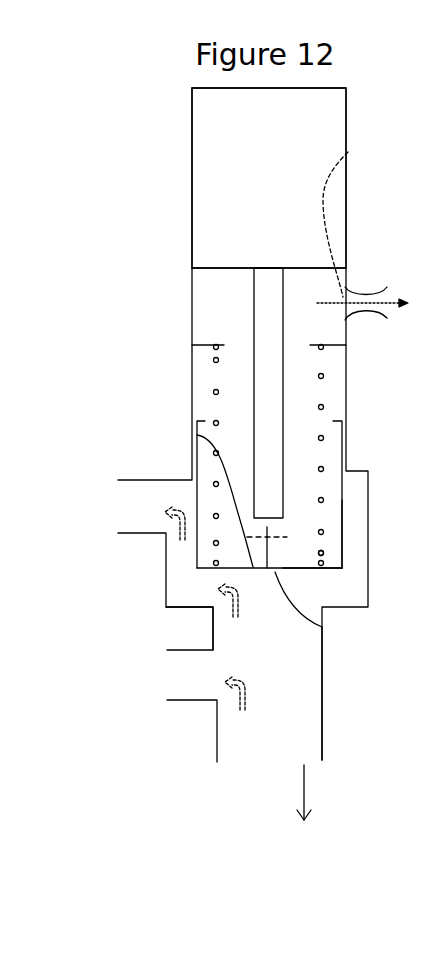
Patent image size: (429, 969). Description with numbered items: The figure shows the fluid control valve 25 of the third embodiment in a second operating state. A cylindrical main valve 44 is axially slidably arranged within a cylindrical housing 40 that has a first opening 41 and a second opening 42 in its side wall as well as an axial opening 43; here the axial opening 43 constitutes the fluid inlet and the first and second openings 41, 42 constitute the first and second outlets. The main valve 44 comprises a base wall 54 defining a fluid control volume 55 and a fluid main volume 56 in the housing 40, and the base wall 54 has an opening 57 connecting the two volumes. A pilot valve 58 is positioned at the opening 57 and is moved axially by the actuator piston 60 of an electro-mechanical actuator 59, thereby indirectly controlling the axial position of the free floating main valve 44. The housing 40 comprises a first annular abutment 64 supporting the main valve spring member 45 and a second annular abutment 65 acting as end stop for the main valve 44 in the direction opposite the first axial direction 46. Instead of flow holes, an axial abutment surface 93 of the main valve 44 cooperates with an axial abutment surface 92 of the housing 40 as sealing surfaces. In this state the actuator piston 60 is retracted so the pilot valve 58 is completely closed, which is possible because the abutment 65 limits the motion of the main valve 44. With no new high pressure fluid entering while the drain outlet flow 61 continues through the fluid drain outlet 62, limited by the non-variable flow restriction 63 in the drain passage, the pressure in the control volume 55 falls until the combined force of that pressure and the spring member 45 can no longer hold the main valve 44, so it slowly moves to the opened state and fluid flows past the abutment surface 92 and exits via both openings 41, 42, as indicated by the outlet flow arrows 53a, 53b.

The fluid control valve 25 is at (175, 100).
The electro-mechanical actuator 59 is at (237, 177).
The cylindrical housing 40 is at (192, 270).
The actuator piston 60 is at (269, 308).
The first annular abutment 64 is at (197, 342).
The main valve spring member 45 is at (323, 375).
The opening 57 is at (197, 435).
The second annular abutment 65 is at (337, 423).
The fluid control volume 55 is at (290, 487).
The main valve 44 is at (342, 527).
The base wall 54 is at (327, 570).
The axial abutment surface of the main valve 93 is at (310, 570).
The pilot valve 58 is at (322, 627).
The fluid main volume 56 is at (285, 700).
The first axial direction 46 is at (304, 793).
The drain outlet flow 61 is at (350, 210).
The non-variable flow restriction 63 is at (368, 296).
The fluid drain outlet 62 is at (383, 297).
The second opening 42 is at (153, 509).
The return flow 53b is at (233, 600).
The axial abutment surface of the housing 92 is at (203, 607).
The first opening 41 is at (178, 672).
The return flow 53a is at (227, 689).
The axial opening 43 is at (283, 752).